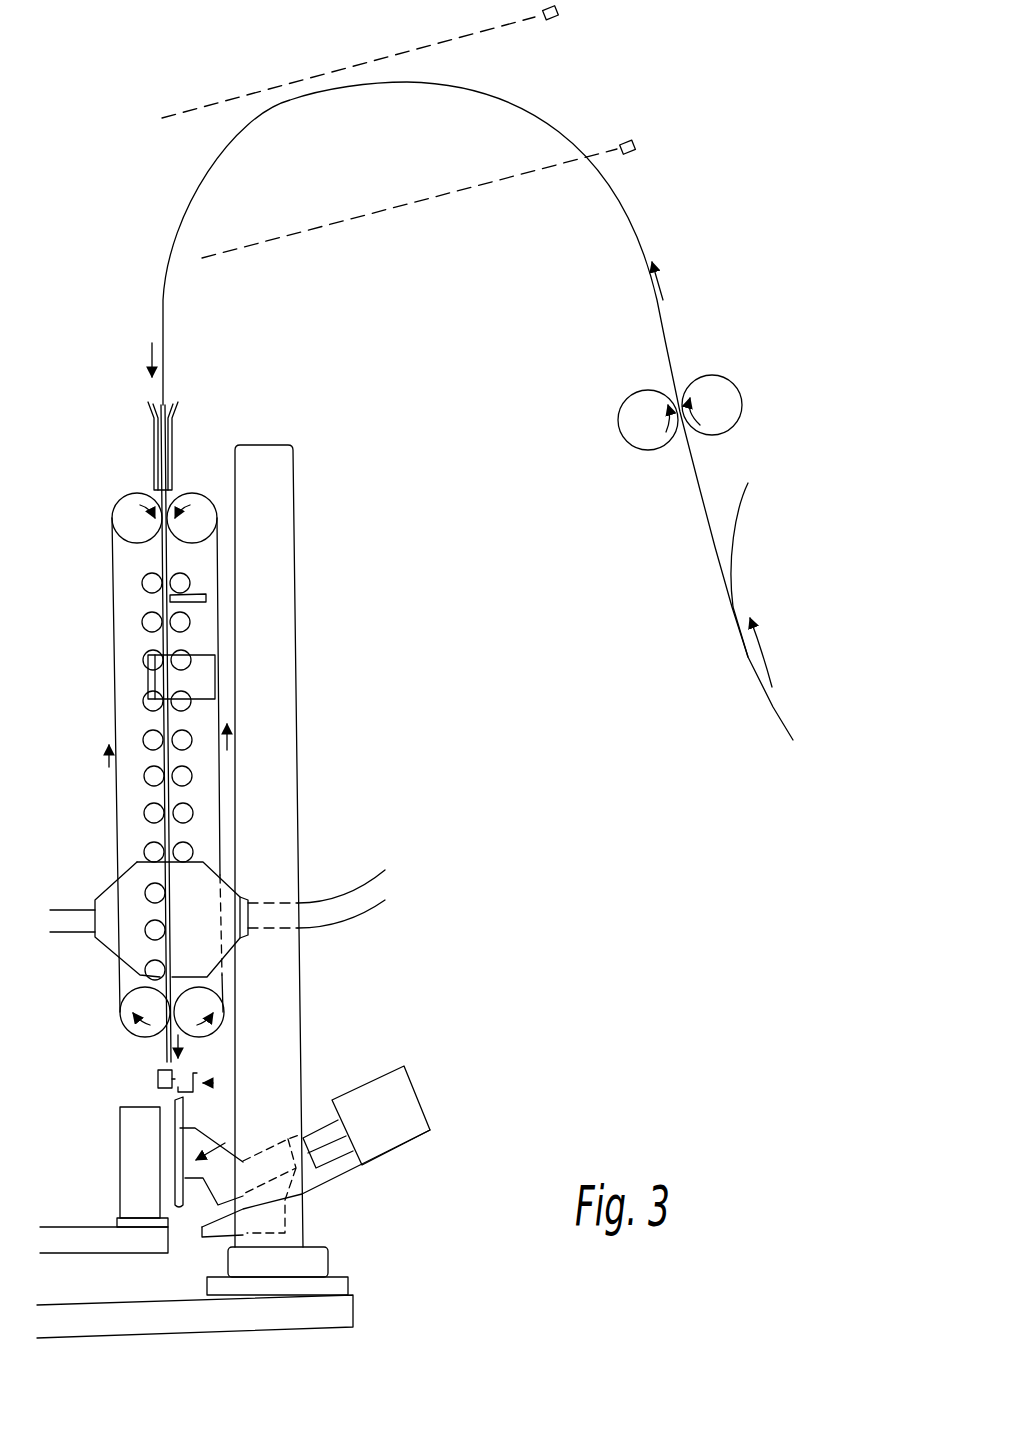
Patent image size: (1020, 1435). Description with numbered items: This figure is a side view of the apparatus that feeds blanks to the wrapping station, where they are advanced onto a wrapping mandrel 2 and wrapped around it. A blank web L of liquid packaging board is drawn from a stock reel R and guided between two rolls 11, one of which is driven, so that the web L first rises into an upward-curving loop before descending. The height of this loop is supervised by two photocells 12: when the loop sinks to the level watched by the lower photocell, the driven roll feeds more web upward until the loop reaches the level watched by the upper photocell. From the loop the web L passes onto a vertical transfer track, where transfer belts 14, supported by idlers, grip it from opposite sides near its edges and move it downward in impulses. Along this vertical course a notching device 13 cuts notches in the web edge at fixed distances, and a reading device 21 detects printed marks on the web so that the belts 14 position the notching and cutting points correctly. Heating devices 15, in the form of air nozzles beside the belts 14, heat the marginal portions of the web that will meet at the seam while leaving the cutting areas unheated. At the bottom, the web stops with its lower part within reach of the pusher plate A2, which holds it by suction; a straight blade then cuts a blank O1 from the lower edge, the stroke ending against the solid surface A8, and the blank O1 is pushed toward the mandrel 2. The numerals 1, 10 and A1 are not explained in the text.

The base 1 is at (80, 1242).
The wrapping mandrel 2 is at (130, 1177).
The frame / column 10 is at (287, 628).
The rolls 11 is at (628, 416).
The photocells 12 is at (556, 18).
The notching device 13 is at (197, 677).
The transfer belts 14 is at (152, 645).
The heating devices 15 is at (135, 880).
The printed mark reading device 21 is at (196, 595).
The first position A1 is at (200, 1073).
The pusher plate A2 is at (180, 1122).
The solid surface A8 is at (158, 1079).
The blank O1 is at (175, 1140).
The blank web L is at (165, 357).
The stock reel R is at (778, 700).